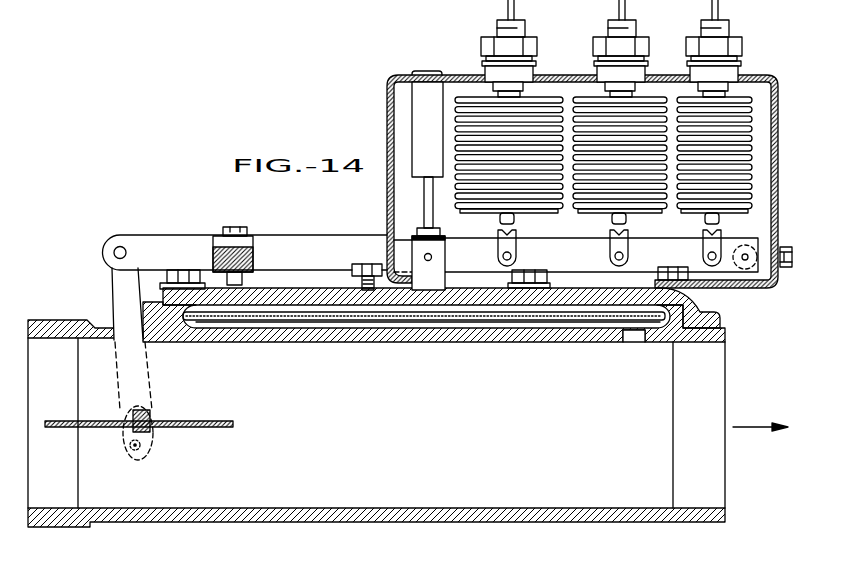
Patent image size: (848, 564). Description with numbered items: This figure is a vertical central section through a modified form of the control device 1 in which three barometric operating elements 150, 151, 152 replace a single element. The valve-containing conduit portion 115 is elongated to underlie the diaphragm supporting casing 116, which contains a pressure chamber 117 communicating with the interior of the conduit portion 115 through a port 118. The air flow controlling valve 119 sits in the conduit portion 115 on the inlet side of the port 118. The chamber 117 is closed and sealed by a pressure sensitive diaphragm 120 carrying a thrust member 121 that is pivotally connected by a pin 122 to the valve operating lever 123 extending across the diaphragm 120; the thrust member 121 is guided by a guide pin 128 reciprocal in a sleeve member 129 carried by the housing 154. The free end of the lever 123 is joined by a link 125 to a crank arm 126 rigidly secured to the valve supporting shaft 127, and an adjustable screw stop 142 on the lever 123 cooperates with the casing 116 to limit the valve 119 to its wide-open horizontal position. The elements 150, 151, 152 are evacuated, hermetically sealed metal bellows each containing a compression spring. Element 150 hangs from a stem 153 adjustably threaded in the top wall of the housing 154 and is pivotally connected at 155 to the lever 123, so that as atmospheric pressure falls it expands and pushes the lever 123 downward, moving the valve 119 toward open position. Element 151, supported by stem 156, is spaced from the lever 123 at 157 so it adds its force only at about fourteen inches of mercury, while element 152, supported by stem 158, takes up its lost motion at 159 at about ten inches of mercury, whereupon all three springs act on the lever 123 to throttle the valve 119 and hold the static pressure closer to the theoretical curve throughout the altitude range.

The control device 1 is at (402, 68).
The conduit portion 115 is at (425, 523).
The diaphragm supporting casing 116 is at (712, 313).
The pressure chamber 117 is at (505, 329).
The port 118 is at (634, 343).
The air flow controlling valve 119 is at (211, 421).
The diaphragm 120 is at (476, 322).
The thrust member 121 is at (446, 257).
The pin 122 is at (430, 266).
The valve operating lever 123 is at (356, 244).
The link 125 is at (117, 294).
The crank arm 126 is at (150, 412).
The valve supporting shaft 127 is at (149, 440).
The guide pin 128 is at (424, 212).
The sleeve member 129 is at (437, 144).
The adjustable screw stop 142 is at (248, 243).
The barometric operating element 150 is at (752, 103).
The barometric operating element 151 is at (661, 97).
The barometric operating element 152 is at (550, 97).
The supporting member 153 is at (731, 25).
The housing 154 is at (779, 122).
The pivotal connection 155 is at (703, 258).
The supporting member 156 is at (637, 25).
The spacing 157 is at (630, 229).
The supporting member 158 is at (525, 25).
The lost motion 159 is at (518, 223).